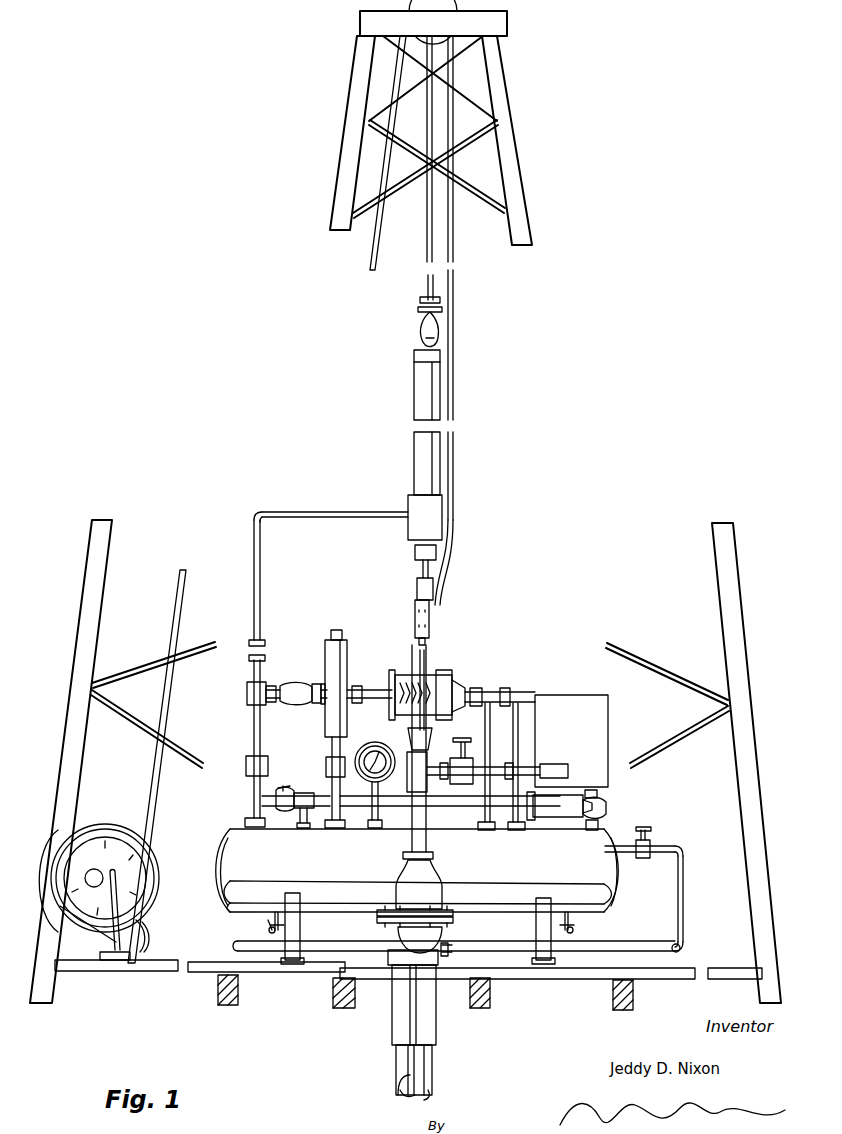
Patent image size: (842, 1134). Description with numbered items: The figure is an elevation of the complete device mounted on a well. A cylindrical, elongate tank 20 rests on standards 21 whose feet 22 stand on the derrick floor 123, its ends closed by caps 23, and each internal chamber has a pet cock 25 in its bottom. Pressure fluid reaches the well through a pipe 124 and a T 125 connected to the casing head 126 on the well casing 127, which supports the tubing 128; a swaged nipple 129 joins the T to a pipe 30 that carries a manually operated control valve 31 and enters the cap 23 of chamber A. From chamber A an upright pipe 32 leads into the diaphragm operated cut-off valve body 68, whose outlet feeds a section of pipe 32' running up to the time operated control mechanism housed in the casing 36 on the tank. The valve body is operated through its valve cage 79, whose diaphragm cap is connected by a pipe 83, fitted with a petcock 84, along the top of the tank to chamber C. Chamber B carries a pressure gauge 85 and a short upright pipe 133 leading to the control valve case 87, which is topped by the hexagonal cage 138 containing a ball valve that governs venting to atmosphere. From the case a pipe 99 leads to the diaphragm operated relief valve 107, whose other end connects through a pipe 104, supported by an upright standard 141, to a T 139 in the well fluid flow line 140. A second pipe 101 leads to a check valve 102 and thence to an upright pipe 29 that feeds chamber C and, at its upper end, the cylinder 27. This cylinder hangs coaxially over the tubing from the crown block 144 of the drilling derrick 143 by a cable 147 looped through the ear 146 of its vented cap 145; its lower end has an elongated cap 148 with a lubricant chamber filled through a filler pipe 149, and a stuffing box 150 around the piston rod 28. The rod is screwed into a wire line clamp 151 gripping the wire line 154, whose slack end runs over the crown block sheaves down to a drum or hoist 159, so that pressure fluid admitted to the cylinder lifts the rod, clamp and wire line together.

The tank 20 is at (235, 832).
The standards 21 is at (310, 922).
The feet 22 is at (305, 975).
The caps 23 is at (222, 858).
The pet cock 25 is at (272, 925).
The cylinder 27 is at (414, 462).
The piston rod 28 is at (420, 572).
The upright pipe 29 is at (320, 518).
The pipe 30 is at (684, 897).
The control valve 31 is at (650, 835).
The upright pipe 32 is at (610, 822).
The section of pipe 32' is at (610, 792).
The casing or housing 36 is at (608, 718).
The cut-off valve body 68 is at (608, 812).
The valve cage 79 is at (553, 825).
The pipe 83 is at (362, 820).
The petcock 84 is at (280, 790).
The pressure gauge 85 is at (385, 745).
The control valve case 87 is at (325, 684).
The pipe 99 is at (360, 688).
The pipe 101 is at (300, 706).
The check valve 102 is at (292, 686).
The pipe 104 is at (505, 697).
The relief valve 107 is at (435, 672).
The derrick floor 123 is at (160, 966).
The pipe 124 is at (240, 945).
The T 125 is at (385, 930).
The casing head 126 is at (448, 928).
The well casing 127 is at (428, 1032).
The tubing 128 is at (425, 1062).
The swaged nipple 129 is at (452, 948).
The upright pipe 133 is at (328, 758).
The cage 138 is at (337, 632).
The T 139 is at (543, 765).
The well fluid flow line 140 is at (560, 766).
The upright standard 141 is at (485, 815).
The drilling derrick 143 is at (510, 152).
The crown block 144 is at (507, 30).
The vented cap 145 is at (414, 360).
The ear 146 is at (422, 342).
The cable 147 is at (427, 250).
The elongated cap 148 is at (410, 500).
The filler pipe 149 is at (450, 512).
The stuffing box 150 is at (415, 552).
The wire line clamp 151 is at (418, 588).
The wire line 154 is at (370, 258).
The drum or hoist 159 is at (120, 826).